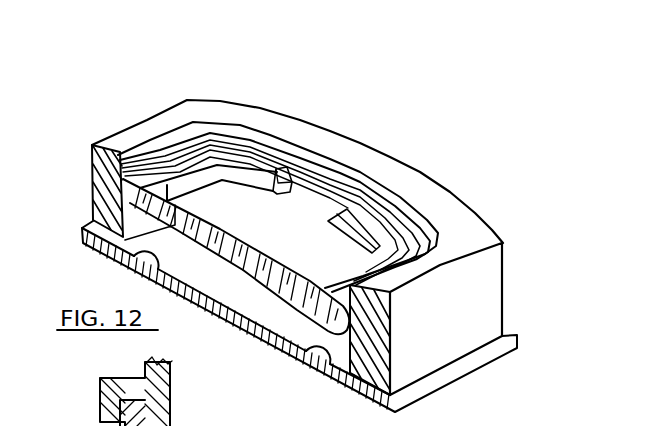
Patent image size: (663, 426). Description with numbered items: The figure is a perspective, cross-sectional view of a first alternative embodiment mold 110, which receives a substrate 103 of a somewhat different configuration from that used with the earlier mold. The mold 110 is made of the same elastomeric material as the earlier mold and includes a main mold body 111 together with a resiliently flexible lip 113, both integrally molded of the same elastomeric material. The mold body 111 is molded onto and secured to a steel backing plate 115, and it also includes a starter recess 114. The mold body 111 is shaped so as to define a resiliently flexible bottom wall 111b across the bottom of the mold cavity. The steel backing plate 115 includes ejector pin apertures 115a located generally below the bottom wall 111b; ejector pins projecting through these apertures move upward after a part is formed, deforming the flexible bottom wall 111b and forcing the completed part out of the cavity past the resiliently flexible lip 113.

The substrate 103 is at (296, 205).
The mold 110 is at (564, 272).
The main mold body 111 is at (485, 281).
The resiliently flexible bottom wall 111b is at (257, 277).
The resiliently flexible lip 113 is at (349, 196).
The starter recess 114 is at (238, 133).
The steel backing plate 115 is at (493, 356).
The ejector pin apertures 115a is at (146, 261).